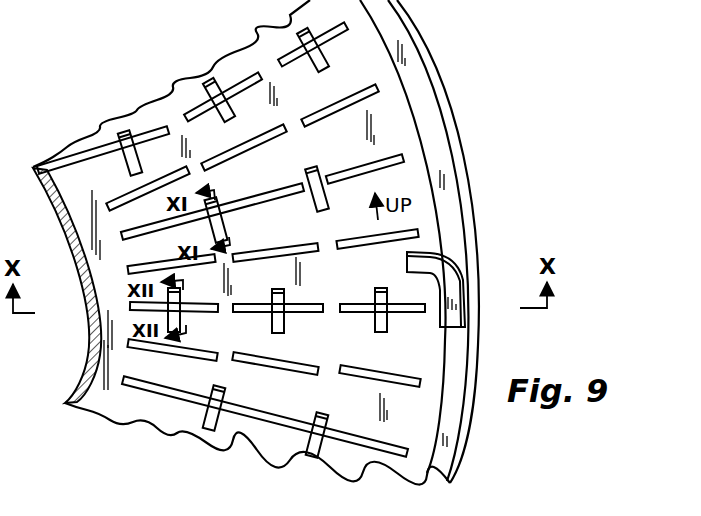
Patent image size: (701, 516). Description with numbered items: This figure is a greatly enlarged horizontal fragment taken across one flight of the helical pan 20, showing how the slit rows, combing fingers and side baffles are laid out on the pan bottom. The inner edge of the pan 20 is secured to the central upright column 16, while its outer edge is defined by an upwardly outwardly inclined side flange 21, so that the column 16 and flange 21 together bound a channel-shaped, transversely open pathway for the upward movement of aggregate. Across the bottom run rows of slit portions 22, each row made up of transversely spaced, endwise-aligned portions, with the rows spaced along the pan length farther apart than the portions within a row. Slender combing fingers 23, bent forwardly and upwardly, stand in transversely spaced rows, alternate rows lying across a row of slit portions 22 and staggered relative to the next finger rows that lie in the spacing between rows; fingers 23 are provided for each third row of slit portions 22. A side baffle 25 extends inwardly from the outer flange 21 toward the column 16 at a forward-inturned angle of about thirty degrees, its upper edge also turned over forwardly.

The central upright column 16 is at (70, 356).
The helical pan 20 is at (160, 107).
The side flange 21 is at (447, 118).
The slit portions 22 is at (70, 147).
The combing fingers 23 is at (121, 132).
The side baffles 25 is at (450, 257).